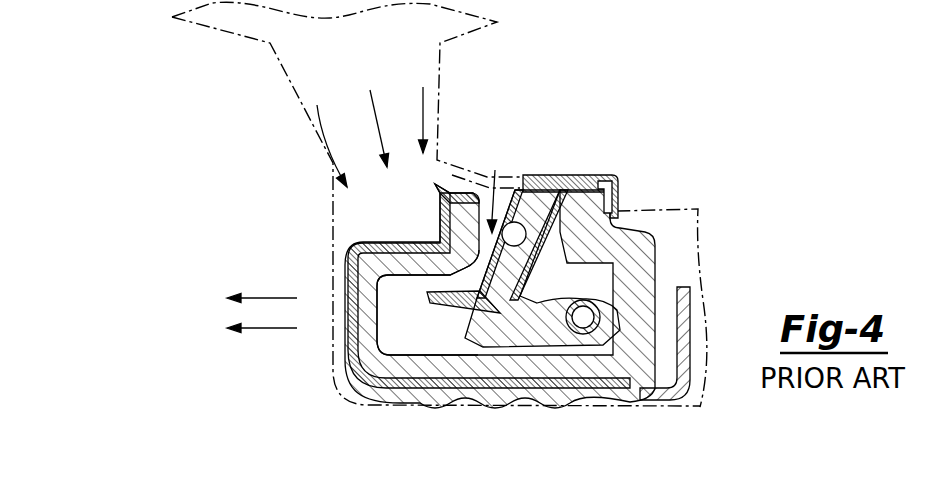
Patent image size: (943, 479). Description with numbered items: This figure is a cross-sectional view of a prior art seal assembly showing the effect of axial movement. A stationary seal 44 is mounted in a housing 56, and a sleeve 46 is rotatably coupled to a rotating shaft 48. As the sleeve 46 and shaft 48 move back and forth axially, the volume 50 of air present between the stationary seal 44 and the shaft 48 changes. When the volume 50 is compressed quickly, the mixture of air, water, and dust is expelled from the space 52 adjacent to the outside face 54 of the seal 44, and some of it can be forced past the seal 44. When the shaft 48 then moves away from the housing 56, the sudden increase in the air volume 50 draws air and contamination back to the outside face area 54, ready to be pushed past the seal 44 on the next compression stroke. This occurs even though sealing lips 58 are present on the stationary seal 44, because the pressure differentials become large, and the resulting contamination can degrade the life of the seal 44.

The stationary seal 44 is at (553, 178).
The sleeve 46 is at (357, 322).
The shaft 48 is at (642, 436).
The volume of air 50 is at (359, 87).
The space 52 is at (502, 273).
The outside face 54 is at (509, 222).
The housing 56 is at (664, 146).
The sealing lips 58 is at (477, 350).